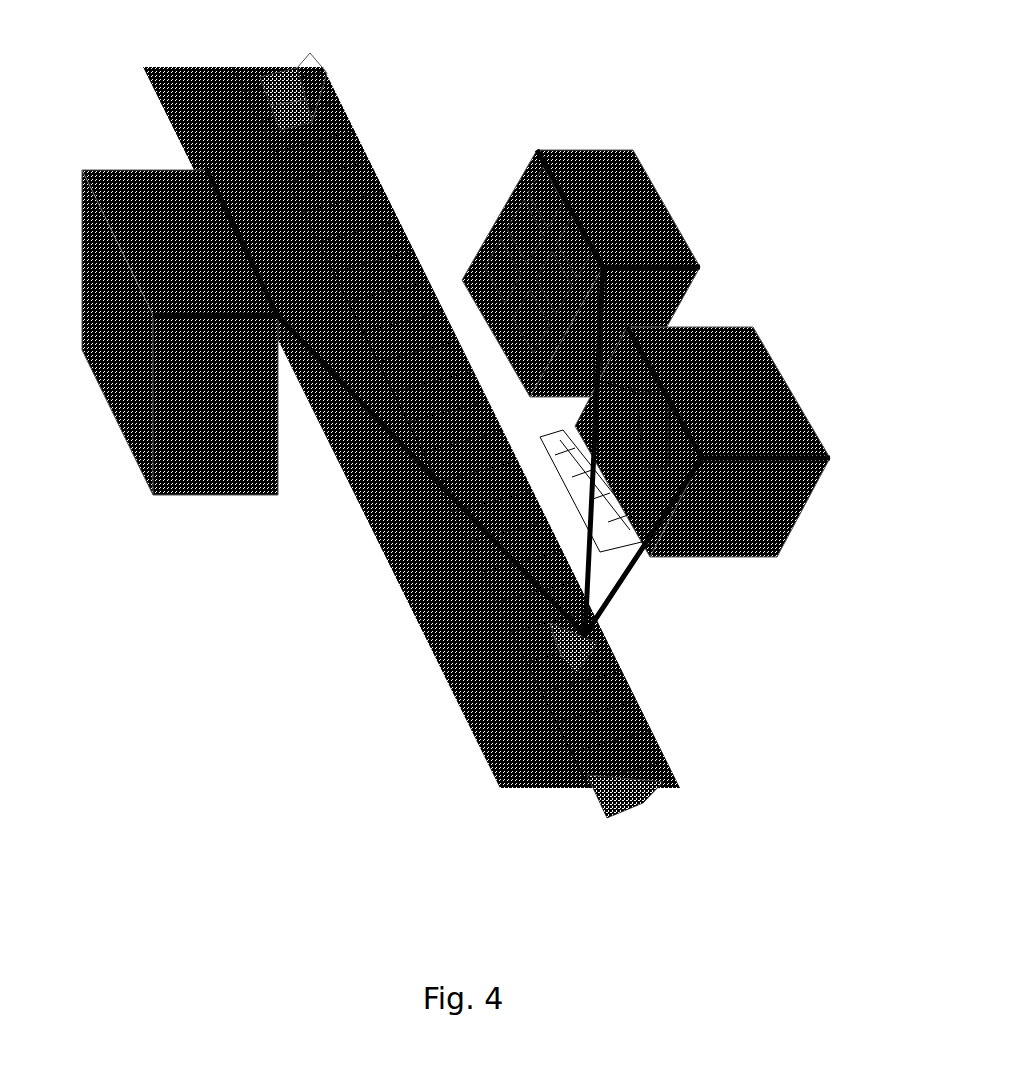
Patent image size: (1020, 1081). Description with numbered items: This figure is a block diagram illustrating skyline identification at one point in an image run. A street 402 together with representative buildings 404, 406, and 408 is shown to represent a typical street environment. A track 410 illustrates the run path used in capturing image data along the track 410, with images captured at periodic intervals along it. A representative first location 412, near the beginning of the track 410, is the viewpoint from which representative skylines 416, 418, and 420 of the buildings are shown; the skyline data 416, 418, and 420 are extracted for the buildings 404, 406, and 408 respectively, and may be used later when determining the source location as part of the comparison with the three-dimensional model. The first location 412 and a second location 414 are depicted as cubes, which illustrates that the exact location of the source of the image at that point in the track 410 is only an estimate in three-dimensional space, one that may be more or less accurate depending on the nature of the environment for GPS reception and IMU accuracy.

The street 402 is at (440, 660).
The building 404 is at (793, 392).
The building 406 is at (663, 205).
The building 408 is at (85, 213).
The track 410 is at (640, 798).
The first location 412 is at (600, 665).
The second location 414 is at (283, 90).
The skyline 416 is at (797, 468).
The skyline 418 is at (545, 185).
The skyline 420 is at (195, 318).